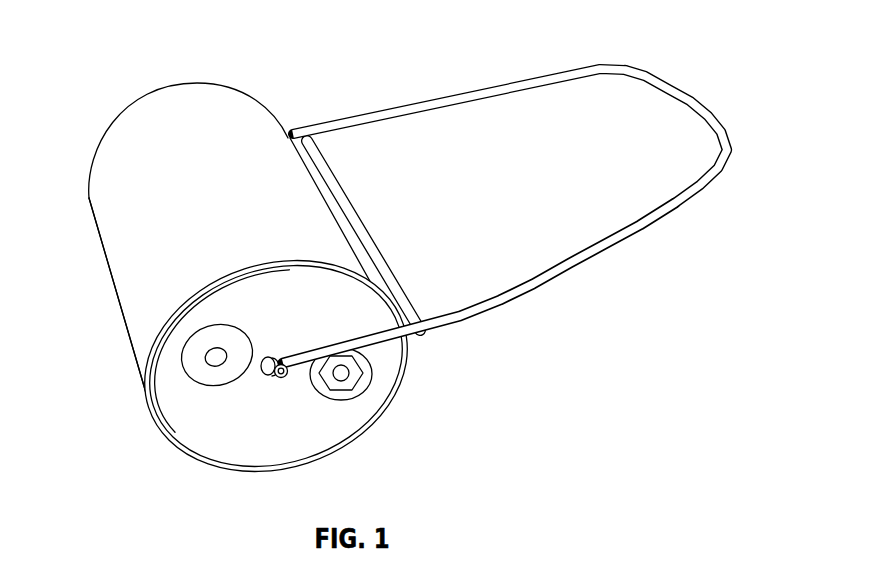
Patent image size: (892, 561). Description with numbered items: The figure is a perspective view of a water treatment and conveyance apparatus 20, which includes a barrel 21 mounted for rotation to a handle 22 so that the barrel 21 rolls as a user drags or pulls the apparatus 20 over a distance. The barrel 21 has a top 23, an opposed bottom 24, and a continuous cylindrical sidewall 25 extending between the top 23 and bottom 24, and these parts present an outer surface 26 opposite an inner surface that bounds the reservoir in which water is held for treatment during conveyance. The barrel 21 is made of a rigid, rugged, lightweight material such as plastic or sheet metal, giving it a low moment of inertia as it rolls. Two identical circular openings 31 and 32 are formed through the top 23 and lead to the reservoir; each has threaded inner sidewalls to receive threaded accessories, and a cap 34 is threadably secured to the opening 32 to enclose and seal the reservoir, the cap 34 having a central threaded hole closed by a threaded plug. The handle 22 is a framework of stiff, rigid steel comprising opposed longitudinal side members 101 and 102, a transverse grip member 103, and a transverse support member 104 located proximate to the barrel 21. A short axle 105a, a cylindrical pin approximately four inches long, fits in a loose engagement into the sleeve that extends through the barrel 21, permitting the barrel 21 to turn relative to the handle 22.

The water treatment and conveyance apparatus 20 is at (393, 260).
The barrel 21 is at (244, 271).
The handle 22 is at (512, 209).
The top 23 is at (175, 450).
The bottom 24 is at (101, 140).
The continuous cylindrical sidewall 25 is at (123, 218).
The outer surface 26 is at (177, 123).
The circular opening 31 is at (179, 363).
The circular opening 32 is at (375, 411).
The cap 34 is at (348, 386).
The longitudinal side member 101 is at (590, 250).
The longitudinal side member 102 is at (474, 94).
The transverse grip member 103 is at (673, 90).
The transverse support member 104 is at (374, 253).
The axle 105a is at (279, 380).